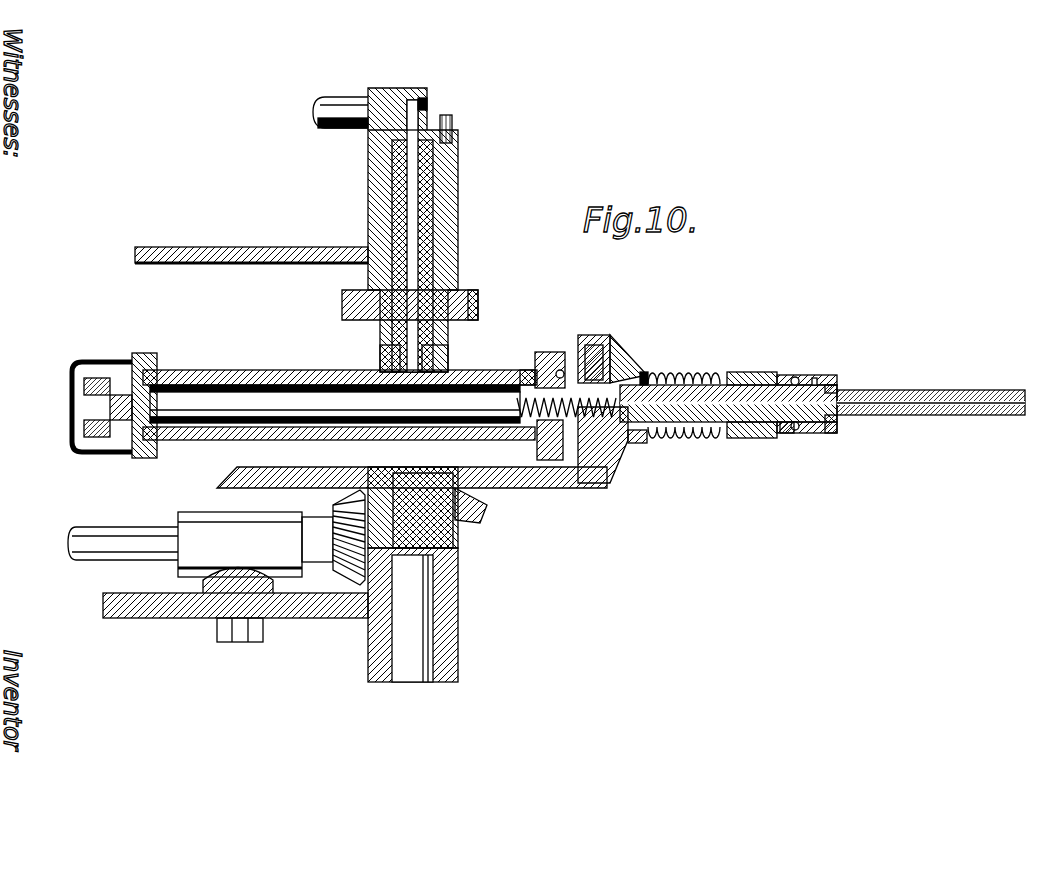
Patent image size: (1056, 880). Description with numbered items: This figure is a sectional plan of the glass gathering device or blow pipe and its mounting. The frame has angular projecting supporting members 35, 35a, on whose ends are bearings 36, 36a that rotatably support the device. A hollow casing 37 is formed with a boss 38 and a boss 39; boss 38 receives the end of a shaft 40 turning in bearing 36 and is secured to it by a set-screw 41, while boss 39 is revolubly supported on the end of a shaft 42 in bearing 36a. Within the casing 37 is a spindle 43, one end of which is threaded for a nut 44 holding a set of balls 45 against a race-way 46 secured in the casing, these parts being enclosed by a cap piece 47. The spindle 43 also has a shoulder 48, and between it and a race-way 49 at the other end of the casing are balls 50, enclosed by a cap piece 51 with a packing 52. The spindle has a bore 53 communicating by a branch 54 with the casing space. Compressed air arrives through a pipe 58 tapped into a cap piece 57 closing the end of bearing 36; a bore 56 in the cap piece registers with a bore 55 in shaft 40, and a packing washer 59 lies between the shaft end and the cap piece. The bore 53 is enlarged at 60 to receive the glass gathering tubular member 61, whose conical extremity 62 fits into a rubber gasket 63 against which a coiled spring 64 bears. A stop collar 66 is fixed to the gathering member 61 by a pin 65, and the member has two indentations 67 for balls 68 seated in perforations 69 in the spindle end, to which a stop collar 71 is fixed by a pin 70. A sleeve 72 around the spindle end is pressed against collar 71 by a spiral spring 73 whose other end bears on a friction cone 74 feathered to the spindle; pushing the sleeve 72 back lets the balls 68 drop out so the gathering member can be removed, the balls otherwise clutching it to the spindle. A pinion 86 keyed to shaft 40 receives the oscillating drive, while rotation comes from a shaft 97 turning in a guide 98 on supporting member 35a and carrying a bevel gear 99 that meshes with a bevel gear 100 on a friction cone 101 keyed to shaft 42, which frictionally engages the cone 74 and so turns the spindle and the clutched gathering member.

The supporting member 35 is at (305, 248).
The supporting member 35a is at (300, 618).
The bearing 36 is at (458, 210).
The bearing 36a is at (458, 592).
The hollow casing 37 is at (208, 440).
The boss 38 is at (447, 366).
The boss 39 is at (450, 478).
The shaft 40 is at (426, 262).
The set-screw 41 is at (472, 292).
The shaft 42 is at (430, 628).
The spindle 43 is at (210, 400).
The nut 44 is at (84, 428).
The balls 45 is at (105, 355).
The race-way 46 is at (140, 365).
The cap piece 47 is at (84, 386).
The shoulder 48 is at (560, 435).
The race-way 49 is at (528, 378).
The balls 50 is at (562, 370).
The cap piece 51 is at (548, 352).
The packing 52 is at (608, 345).
The bore 53 is at (497, 410).
The branch 54 is at (385, 372).
The bore 55 is at (413, 195).
The bore 56 is at (426, 108).
The cap piece 57 is at (394, 90).
The pipe 58 is at (325, 104).
The packing washer 59 is at (447, 128).
The enlargement of bore 60 is at (612, 470).
The gathering tubular member 61 is at (938, 396).
The extremity 62 is at (665, 422).
The rubber gasket 63 is at (645, 374).
The coiled spring 64 is at (636, 443).
The pin 65 is at (837, 390).
The stop collar 66 is at (835, 425).
The indentations 67 is at (792, 378).
The balls 68 is at (785, 430).
The perforations 69 is at (797, 430).
The pin 70 is at (810, 376).
The stop collar 71 is at (812, 380).
The sleeve 72 is at (745, 373).
The spiral spring 73 is at (678, 374).
The friction cone 74 is at (618, 368).
The pinion 86 is at (355, 303).
The shaft 97 is at (145, 560).
The guide 98 is at (205, 577).
The bevel gear 99 is at (350, 582).
The bevel gear 100 is at (482, 512).
The friction cone 101 is at (295, 480).